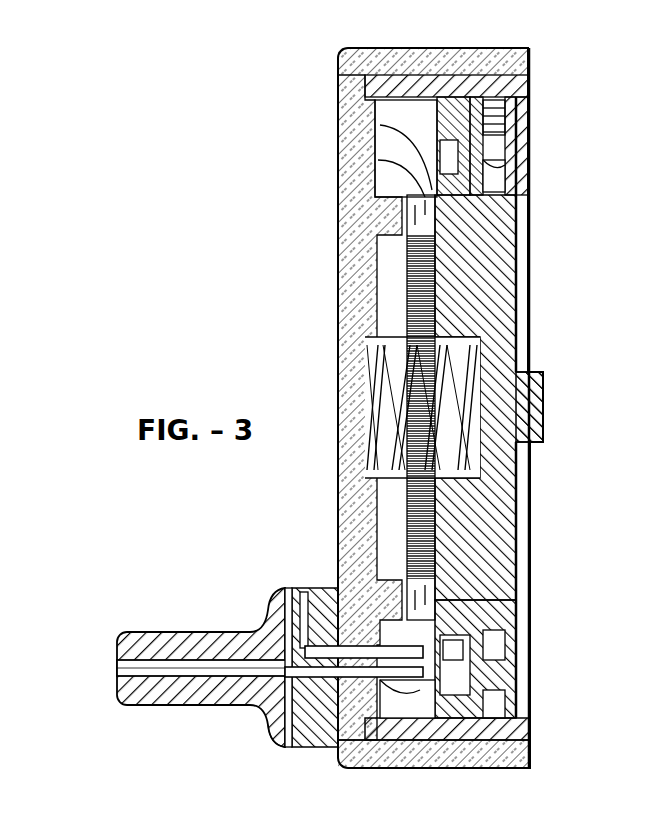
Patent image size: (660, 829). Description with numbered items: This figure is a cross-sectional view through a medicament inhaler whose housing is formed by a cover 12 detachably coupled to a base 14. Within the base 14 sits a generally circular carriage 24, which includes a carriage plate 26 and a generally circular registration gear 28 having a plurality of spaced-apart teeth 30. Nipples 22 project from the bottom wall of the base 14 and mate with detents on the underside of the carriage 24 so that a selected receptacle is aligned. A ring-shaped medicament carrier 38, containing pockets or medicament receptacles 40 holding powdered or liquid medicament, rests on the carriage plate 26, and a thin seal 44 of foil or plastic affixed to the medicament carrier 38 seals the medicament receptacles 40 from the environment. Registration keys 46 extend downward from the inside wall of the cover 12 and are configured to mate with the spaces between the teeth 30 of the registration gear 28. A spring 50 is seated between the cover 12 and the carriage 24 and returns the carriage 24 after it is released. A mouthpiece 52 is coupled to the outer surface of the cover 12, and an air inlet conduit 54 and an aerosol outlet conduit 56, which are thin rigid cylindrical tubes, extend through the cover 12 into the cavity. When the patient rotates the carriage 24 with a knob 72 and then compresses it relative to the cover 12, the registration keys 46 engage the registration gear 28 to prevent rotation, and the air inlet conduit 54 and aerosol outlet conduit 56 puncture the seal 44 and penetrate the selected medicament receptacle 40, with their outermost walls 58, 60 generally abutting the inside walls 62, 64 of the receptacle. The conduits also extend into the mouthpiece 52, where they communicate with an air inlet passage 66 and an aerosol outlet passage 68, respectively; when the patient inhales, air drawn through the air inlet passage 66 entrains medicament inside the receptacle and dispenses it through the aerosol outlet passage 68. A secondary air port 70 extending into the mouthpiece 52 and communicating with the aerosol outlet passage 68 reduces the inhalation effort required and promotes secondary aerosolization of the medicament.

The cover 12 is at (338, 290).
The base 14 is at (528, 140).
The nipples 22 is at (505, 175).
The carriage 24 is at (522, 303).
The carriage plate 26 is at (505, 115).
The registration gear 28 is at (405, 518).
The teeth 30 is at (435, 192).
The medicament carrier 38 is at (458, 100).
The medicament receptacles 40 is at (442, 97).
The seal 44 is at (428, 132).
The registration keys 46 is at (395, 400).
The spring 50 is at (495, 470).
The mouthpiece 52 is at (190, 632).
The air inlet conduit 54 is at (395, 632).
The aerosol outlet conduit 56 is at (405, 720).
The outermost wall 58 is at (424, 690).
The outermost wall 60 is at (415, 648).
The inside wall 62 is at (505, 715).
The inside wall 64 is at (505, 645).
The air inlet passage 66 is at (300, 590).
The aerosol outlet passage 68 is at (117, 668).
The secondary air port 70 is at (285, 747).
The knob 72 is at (543, 420).